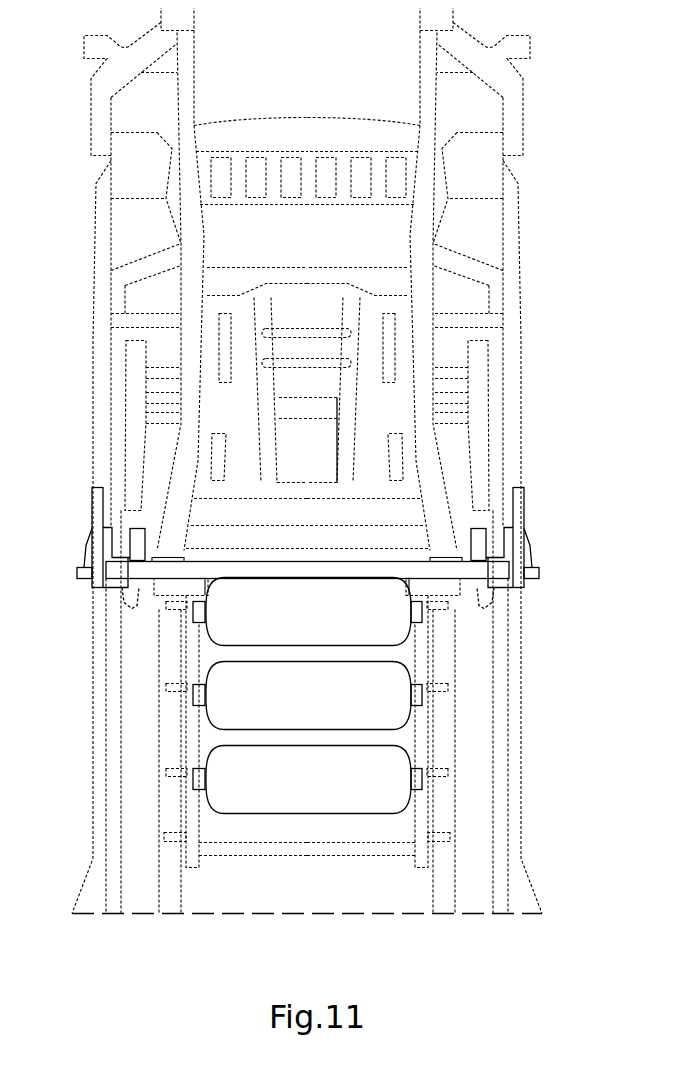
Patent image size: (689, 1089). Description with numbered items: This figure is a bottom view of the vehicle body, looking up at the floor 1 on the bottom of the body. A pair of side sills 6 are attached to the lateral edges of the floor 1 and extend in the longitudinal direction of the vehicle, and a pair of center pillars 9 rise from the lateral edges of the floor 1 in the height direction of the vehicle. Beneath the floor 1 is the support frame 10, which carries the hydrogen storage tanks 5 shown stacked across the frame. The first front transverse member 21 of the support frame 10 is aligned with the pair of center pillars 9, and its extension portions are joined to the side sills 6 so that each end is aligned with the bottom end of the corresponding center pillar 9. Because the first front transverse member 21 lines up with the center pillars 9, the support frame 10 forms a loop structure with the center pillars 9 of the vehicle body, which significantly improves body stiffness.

The floor 1 is at (123, 373).
The hydrogen storage tank 5 is at (227, 612).
The side sill 6 is at (75, 661).
The center pillar 9 is at (86, 549).
The support frame 10 is at (160, 811).
The first front transverse member 21 is at (341, 570).